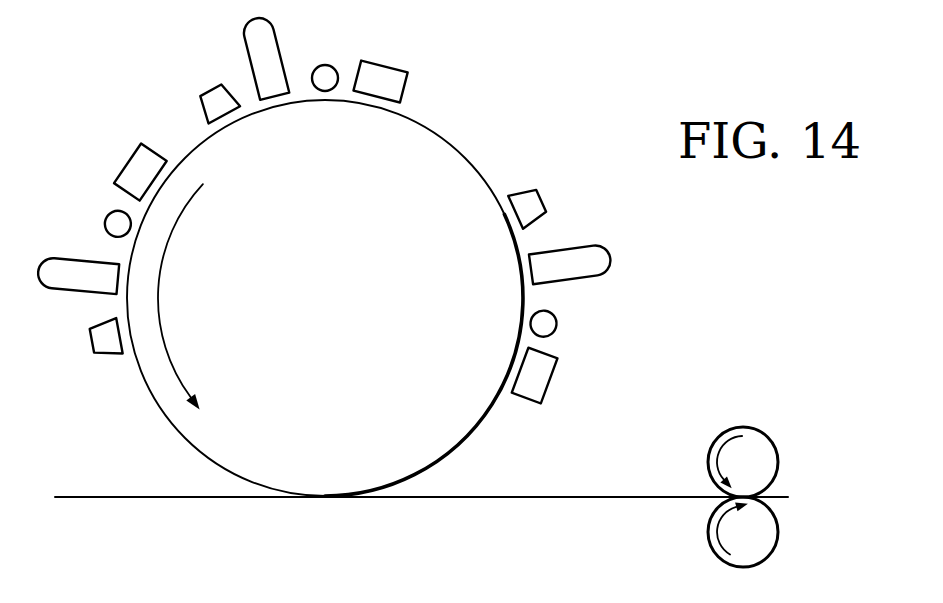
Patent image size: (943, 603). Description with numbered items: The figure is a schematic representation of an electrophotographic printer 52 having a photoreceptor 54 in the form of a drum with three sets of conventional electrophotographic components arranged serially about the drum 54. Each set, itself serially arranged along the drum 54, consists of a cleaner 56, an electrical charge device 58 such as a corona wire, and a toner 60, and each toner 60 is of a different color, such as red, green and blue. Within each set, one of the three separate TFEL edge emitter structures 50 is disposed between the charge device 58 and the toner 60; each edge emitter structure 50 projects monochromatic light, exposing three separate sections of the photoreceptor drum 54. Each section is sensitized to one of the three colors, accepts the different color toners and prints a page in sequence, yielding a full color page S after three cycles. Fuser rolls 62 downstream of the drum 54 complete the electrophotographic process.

The TFEL edge emitter structure 50 is at (257, 58).
The electrophotographic printer 52 is at (568, 108).
The photoreceptor drum 54 is at (443, 146).
The cleaner 56 is at (386, 70).
The electrical charge device 58 is at (330, 64).
The toner 60 is at (210, 104).
The fuser rolls 62 is at (760, 472).
The full color page S is at (573, 499).